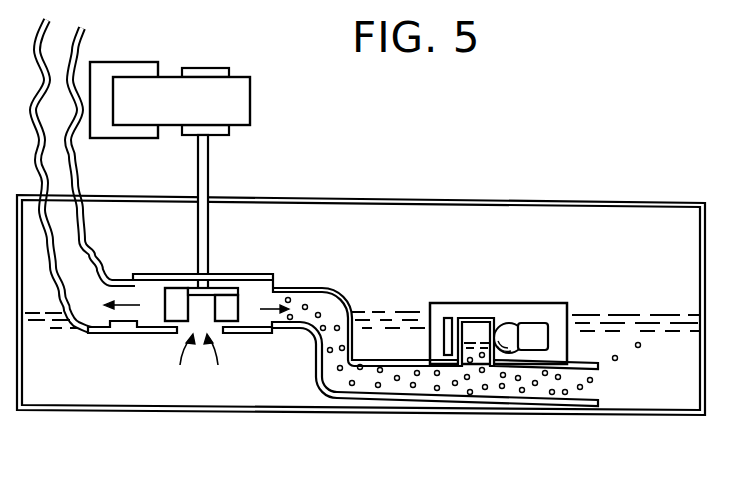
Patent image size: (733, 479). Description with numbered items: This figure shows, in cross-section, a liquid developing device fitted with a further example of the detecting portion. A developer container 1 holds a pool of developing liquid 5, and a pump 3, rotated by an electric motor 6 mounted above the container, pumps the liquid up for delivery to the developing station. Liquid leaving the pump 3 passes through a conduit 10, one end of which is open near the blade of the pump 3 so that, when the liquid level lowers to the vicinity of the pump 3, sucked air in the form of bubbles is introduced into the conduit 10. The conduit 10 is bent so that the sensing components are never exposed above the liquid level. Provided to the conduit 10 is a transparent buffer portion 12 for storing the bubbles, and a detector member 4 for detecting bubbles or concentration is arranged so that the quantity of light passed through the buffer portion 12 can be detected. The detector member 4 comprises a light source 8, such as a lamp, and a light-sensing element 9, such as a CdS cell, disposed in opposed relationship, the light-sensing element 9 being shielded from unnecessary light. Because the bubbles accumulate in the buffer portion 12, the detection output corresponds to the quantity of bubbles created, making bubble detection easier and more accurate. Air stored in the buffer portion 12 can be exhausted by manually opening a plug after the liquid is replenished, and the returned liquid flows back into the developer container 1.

The developer container 1 is at (652, 412).
The pump 3 is at (175, 313).
The detector member 4 is at (558, 303).
The pool of developing liquid 5 is at (290, 386).
The electric motor 6 is at (172, 77).
The light source 8 is at (527, 323).
The light-sensing element 9 is at (448, 318).
The conduit 10 is at (388, 360).
The buffer portion 12 is at (478, 318).